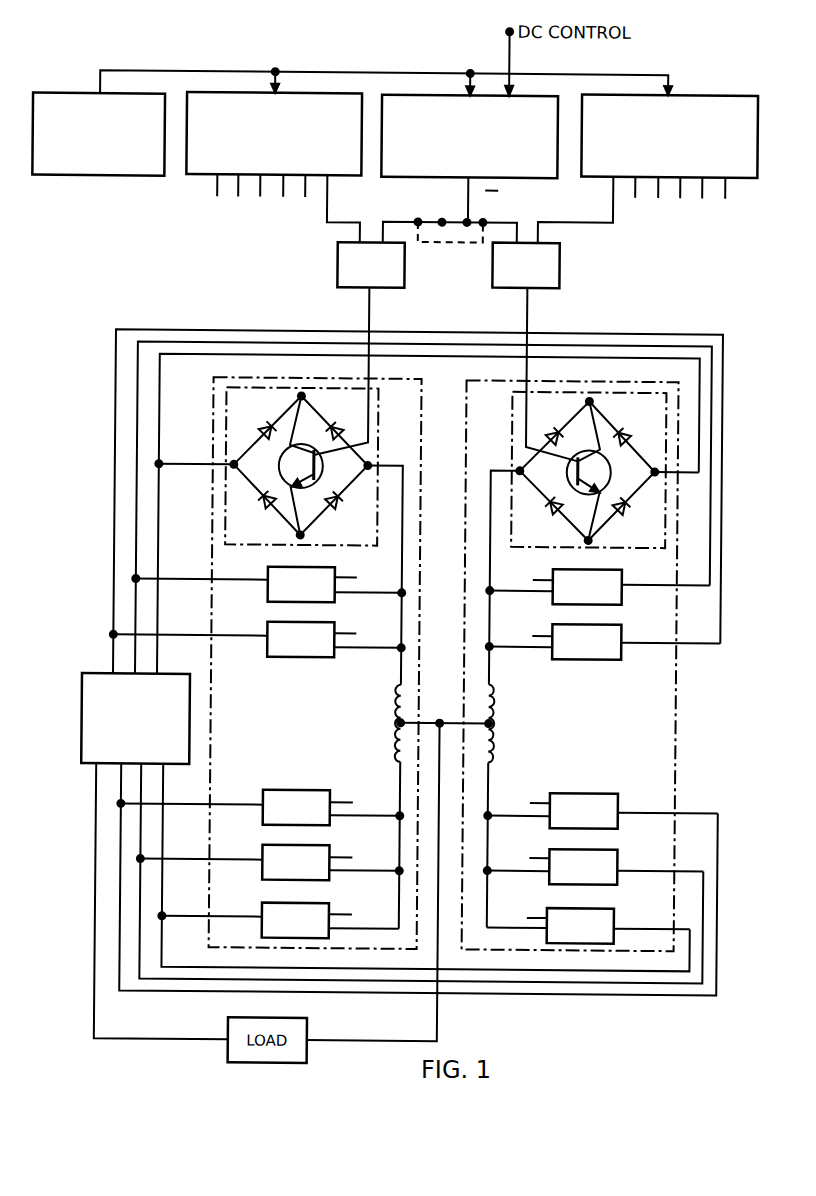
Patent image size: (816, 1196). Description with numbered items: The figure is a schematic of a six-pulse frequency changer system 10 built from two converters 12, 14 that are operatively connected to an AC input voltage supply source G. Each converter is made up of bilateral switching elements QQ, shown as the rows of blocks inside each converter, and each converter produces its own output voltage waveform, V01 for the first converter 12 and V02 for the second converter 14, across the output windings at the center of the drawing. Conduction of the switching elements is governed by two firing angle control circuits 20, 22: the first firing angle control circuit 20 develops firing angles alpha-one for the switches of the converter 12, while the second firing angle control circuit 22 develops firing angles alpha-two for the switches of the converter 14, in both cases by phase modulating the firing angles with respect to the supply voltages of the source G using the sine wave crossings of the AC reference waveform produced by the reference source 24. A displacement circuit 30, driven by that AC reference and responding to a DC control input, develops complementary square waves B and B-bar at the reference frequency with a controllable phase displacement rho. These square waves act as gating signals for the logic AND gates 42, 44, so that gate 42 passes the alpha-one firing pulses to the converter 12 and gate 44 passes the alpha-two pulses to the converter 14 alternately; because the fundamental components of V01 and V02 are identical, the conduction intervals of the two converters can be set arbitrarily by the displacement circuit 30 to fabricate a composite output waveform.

The six-pulse frequency changer system 10 is at (416, 662).
The converter 12 is at (212, 668).
The converter 14 is at (678, 707).
The firing angle control circuit 20 is at (194, 178).
The firing angle control circuit 22 is at (587, 178).
The reference source 24 is at (117, 178).
The displacement circuit 30 is at (392, 178).
The logic AND gate 42 is at (332, 270).
The logic AND gate 44 is at (557, 284).
The AC input voltage supply source G is at (83, 762).
The output voltage waveform V01 is at (392, 713).
The output voltage waveform V02 is at (520, 711).